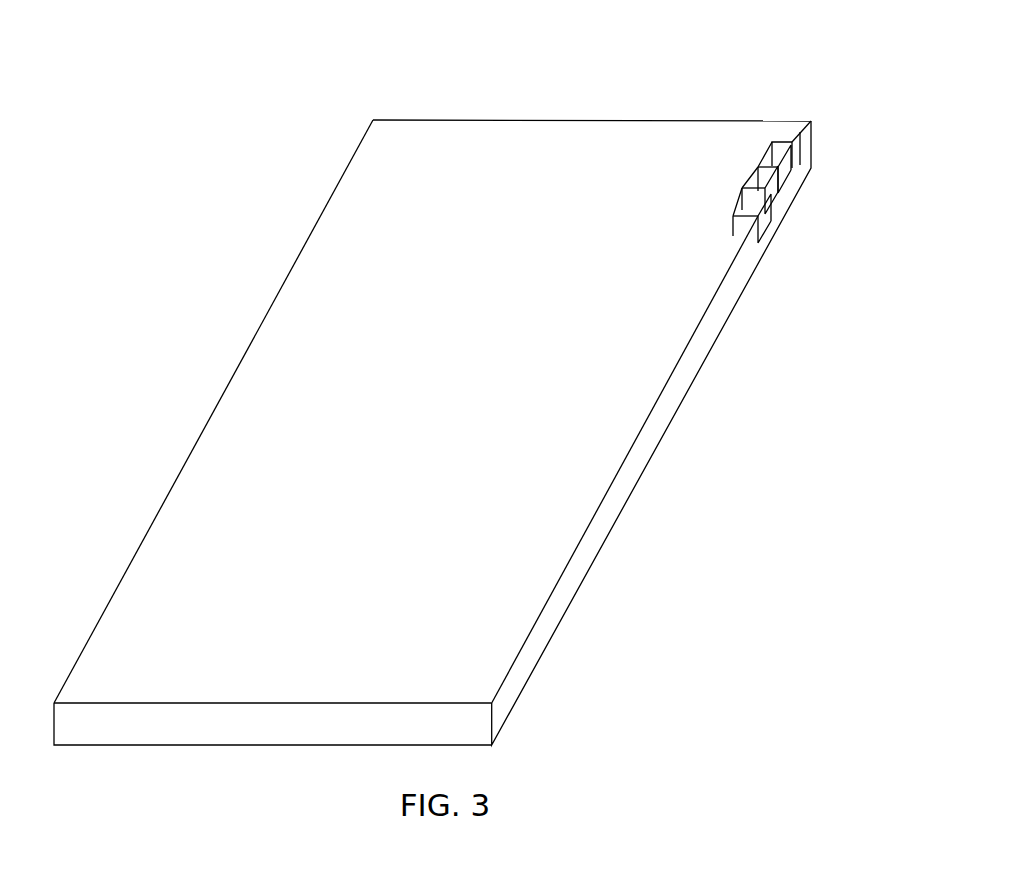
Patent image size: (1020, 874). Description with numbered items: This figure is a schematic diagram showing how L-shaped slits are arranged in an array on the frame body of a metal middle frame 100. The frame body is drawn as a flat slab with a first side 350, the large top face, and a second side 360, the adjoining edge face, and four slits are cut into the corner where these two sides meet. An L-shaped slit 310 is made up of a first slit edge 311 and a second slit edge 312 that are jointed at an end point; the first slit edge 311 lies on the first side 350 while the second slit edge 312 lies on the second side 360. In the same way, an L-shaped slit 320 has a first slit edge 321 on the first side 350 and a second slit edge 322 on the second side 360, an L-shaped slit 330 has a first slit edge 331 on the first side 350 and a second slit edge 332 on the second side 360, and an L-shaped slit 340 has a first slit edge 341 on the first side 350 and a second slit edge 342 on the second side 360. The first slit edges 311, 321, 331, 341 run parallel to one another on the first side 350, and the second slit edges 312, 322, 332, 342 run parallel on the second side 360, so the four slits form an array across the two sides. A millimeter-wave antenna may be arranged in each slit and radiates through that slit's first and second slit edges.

The metal middle frame 100 is at (436, 86).
The first side 350 is at (432, 160).
The second side 360 is at (623, 487).
The L-shaped slit 310 is at (777, 141).
The first slit edge 311 is at (811, 121).
The second slit edge 312 is at (798, 152).
The L-shaped slit 320 is at (768, 167).
The first slit edge 321 is at (768, 162).
The second slit edge 322 is at (783, 182).
The L-shaped slit 330 is at (750, 188).
The first slit edge 331 is at (748, 186).
The second slit edge 332 is at (773, 210).
The L-shaped slit 340 is at (730, 214).
The first slit edge 341 is at (740, 218).
The second slit edge 342 is at (760, 232).